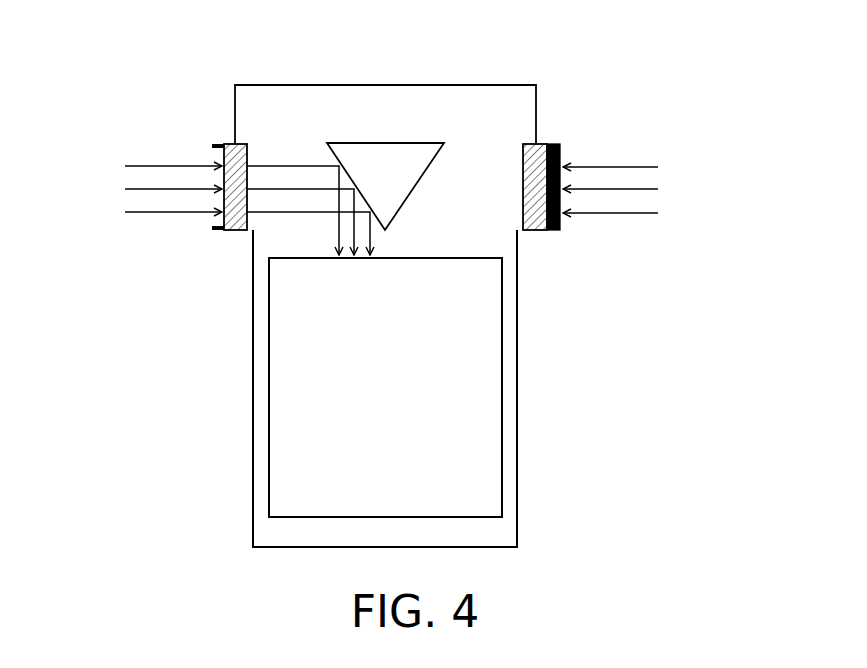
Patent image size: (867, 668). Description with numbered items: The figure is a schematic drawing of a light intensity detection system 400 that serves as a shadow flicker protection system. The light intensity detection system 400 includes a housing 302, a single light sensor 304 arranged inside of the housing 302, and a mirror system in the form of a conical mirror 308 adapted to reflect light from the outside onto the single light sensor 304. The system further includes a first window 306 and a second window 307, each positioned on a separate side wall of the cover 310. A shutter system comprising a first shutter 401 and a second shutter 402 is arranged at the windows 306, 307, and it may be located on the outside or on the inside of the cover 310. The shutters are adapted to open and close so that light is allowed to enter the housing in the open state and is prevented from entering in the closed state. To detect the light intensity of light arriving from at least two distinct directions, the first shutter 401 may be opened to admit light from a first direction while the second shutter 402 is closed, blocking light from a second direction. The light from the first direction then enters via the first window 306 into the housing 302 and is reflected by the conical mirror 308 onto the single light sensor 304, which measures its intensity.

The light intensity detection system 400 is at (150, 36).
The cover 310 is at (536, 88).
The first window 306 is at (229, 230).
The second window 307 is at (530, 230).
The first shutter 401 is at (212, 144).
The second shutter 402 is at (560, 148).
The conical mirror 308 is at (364, 182).
The housing 302 is at (518, 378).
The single light sensor 304 is at (502, 485).